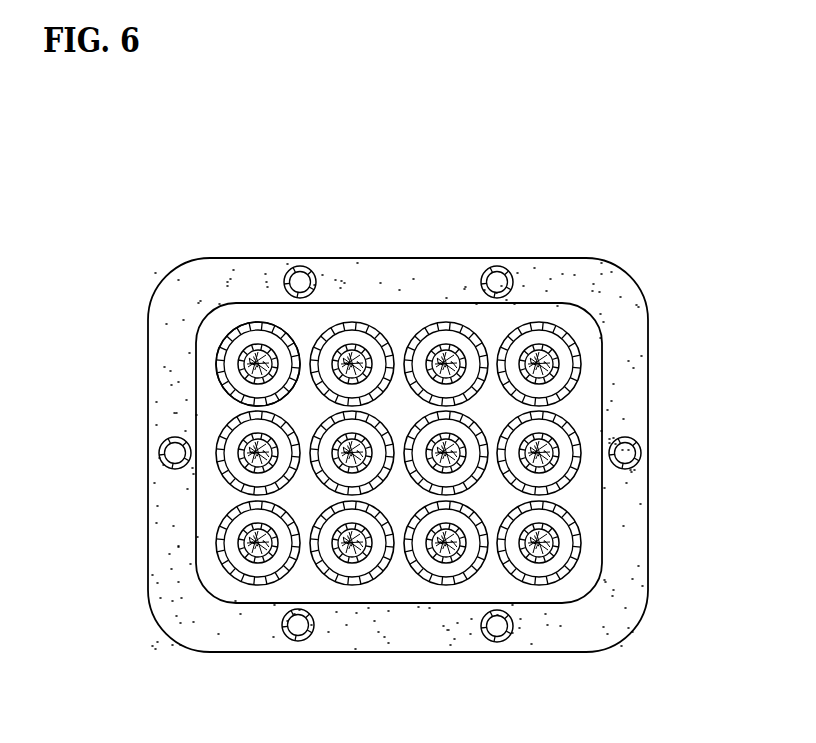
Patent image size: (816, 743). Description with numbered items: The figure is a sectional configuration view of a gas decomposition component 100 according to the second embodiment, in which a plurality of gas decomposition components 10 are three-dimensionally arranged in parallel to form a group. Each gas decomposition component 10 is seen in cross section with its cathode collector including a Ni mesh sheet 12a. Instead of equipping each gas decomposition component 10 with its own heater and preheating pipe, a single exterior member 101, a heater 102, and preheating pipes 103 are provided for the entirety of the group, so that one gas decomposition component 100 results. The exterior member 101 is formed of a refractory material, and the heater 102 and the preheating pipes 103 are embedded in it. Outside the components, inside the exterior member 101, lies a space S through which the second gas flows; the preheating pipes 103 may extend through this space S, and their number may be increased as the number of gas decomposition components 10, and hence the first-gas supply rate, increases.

The gas decomposition component 100 is at (639, 193).
The gas decomposition component 10 is at (368, 322).
The Ni mesh sheet 12a is at (253, 325).
The space S is at (493, 402).
The exterior member 101 is at (532, 642).
The heater 102 is at (392, 630).
The preheating pipe 103 is at (158, 448).